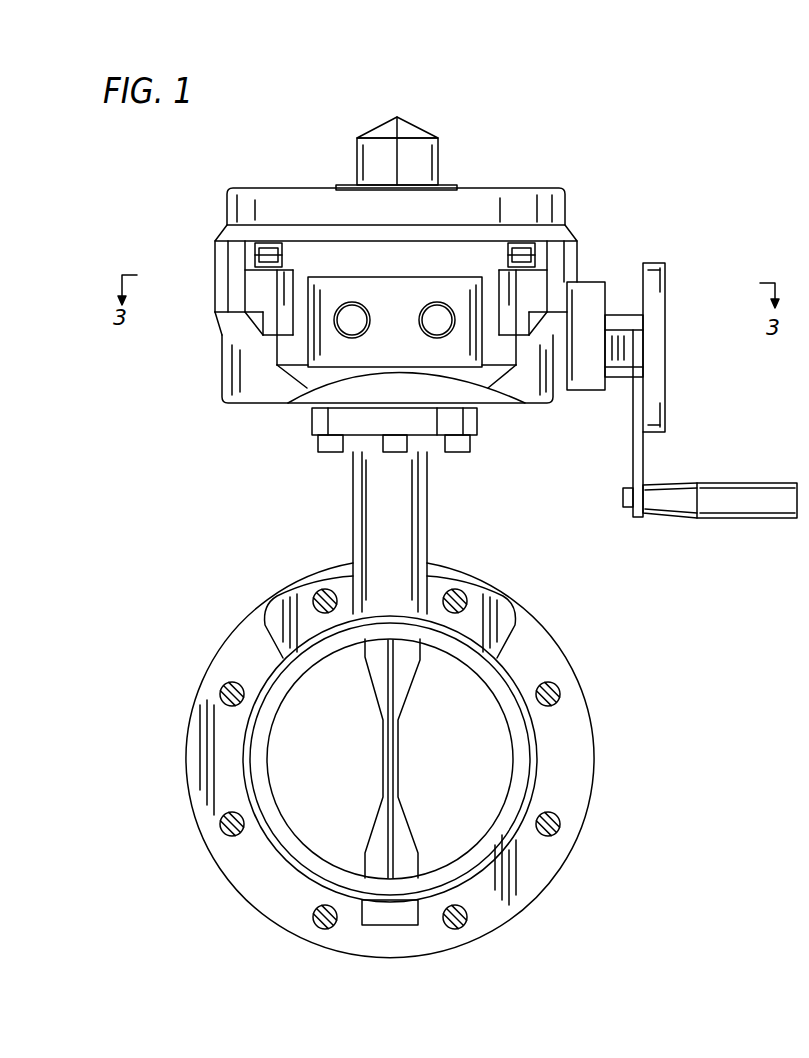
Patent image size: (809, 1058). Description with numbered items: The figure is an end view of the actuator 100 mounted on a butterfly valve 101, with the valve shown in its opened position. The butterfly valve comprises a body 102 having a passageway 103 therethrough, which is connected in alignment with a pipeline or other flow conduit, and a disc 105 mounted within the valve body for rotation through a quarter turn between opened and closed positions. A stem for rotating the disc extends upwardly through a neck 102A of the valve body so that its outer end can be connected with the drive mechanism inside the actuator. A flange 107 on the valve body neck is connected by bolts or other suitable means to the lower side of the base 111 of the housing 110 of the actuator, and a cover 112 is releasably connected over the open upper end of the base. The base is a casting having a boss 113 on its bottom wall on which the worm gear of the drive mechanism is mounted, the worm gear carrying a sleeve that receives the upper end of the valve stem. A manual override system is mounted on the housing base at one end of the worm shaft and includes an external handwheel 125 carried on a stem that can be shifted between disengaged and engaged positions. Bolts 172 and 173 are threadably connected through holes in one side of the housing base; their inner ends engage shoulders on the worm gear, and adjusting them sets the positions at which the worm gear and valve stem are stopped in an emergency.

The actuator 100 is at (582, 209).
The butterfly valve 101 is at (548, 612).
The valve body 102 is at (567, 856).
The neck of the valve body 102A is at (428, 507).
The passageway 103 is at (287, 700).
The disc 105 is at (402, 747).
The flange 107 is at (478, 432).
The housing 110 is at (212, 353).
The base 111 is at (606, 277).
The cover 112 is at (283, 188).
The boss 113 is at (257, 256).
The handwheel 125 is at (665, 382).
The bolt 172 is at (348, 332).
The bolt 173 is at (448, 328).